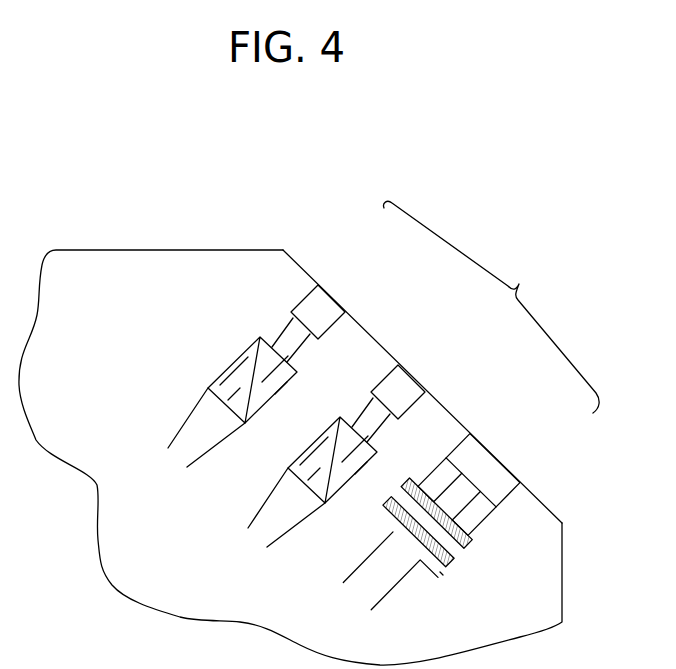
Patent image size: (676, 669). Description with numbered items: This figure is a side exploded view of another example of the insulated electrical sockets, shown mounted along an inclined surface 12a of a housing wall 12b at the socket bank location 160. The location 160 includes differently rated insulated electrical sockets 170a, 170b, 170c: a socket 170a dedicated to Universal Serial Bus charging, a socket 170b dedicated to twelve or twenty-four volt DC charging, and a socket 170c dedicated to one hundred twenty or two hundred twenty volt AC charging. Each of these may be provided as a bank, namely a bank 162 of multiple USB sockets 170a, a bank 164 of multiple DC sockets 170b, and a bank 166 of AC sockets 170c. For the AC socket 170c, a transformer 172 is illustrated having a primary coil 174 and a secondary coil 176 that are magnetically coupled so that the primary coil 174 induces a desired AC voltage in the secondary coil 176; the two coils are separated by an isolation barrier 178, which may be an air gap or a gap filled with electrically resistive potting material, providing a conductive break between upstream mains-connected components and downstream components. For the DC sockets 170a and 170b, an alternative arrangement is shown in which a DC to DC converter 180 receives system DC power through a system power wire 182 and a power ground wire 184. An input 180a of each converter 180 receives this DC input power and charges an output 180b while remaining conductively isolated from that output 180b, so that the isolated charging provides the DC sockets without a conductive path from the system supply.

The inclined surface of housing 12a is at (300, 266).
The housing wall 12b is at (147, 250).
The socket bank location 160 is at (492, 307).
The bank of USB sockets 162 is at (260, 336).
The bank of 12 VDC or 24 VDC sockets 164 is at (342, 417).
The bank of 120 VAC or 220 VAC sockets 166 is at (410, 482).
The USB socket 170a is at (329, 296).
The 12 VDC or 24 VDC socket 170b is at (410, 375).
The 120 VAC or 220 VAC socket 170c is at (497, 458).
The transformer 172 is at (438, 578).
The primary coil 174 is at (447, 580).
The secondary coil 176 is at (468, 546).
The isolation barrier 178 is at (471, 553).
The DC to DC converter 180 is at (207, 389).
The input of DC to DC converter 180a is at (226, 371).
The output of DC to DC converter 180b is at (293, 377).
The system power wire 182 is at (171, 445).
The power ground wire 184 is at (190, 468).